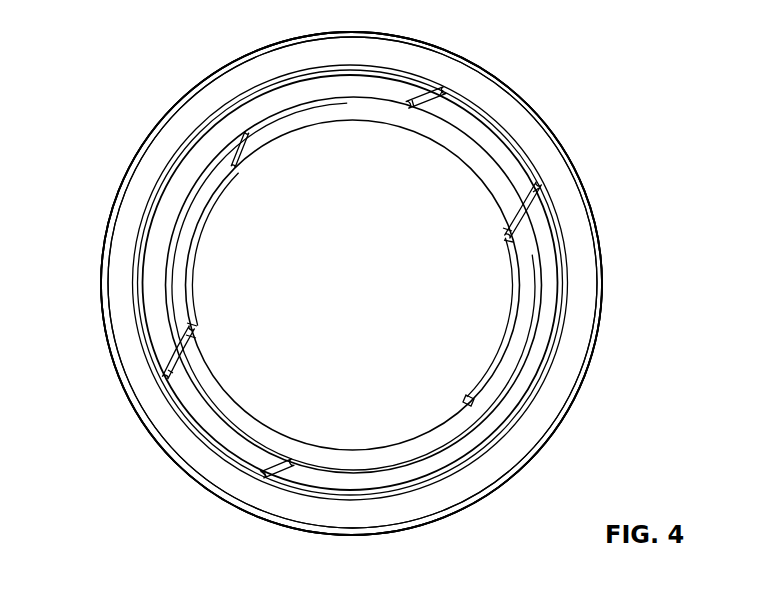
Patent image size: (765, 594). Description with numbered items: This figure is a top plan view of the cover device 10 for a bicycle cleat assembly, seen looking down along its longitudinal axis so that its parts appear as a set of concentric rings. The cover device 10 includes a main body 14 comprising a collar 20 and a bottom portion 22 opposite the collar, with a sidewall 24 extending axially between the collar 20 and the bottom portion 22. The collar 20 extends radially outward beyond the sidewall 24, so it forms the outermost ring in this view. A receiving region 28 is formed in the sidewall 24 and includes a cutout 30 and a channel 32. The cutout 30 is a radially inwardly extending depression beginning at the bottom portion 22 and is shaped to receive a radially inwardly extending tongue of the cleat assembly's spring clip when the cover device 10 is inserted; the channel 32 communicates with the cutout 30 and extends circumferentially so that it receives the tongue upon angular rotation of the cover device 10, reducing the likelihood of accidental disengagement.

The cover device 10 is at (78, 56).
The main body 14 is at (598, 188).
The collar 20 is at (475, 63).
The bottom portion 22 is at (268, 405).
The sidewall 24 is at (163, 272).
The receiving region 28 is at (98, 202).
The cutout 30 is at (186, 232).
The channel 32 is at (260, 112).